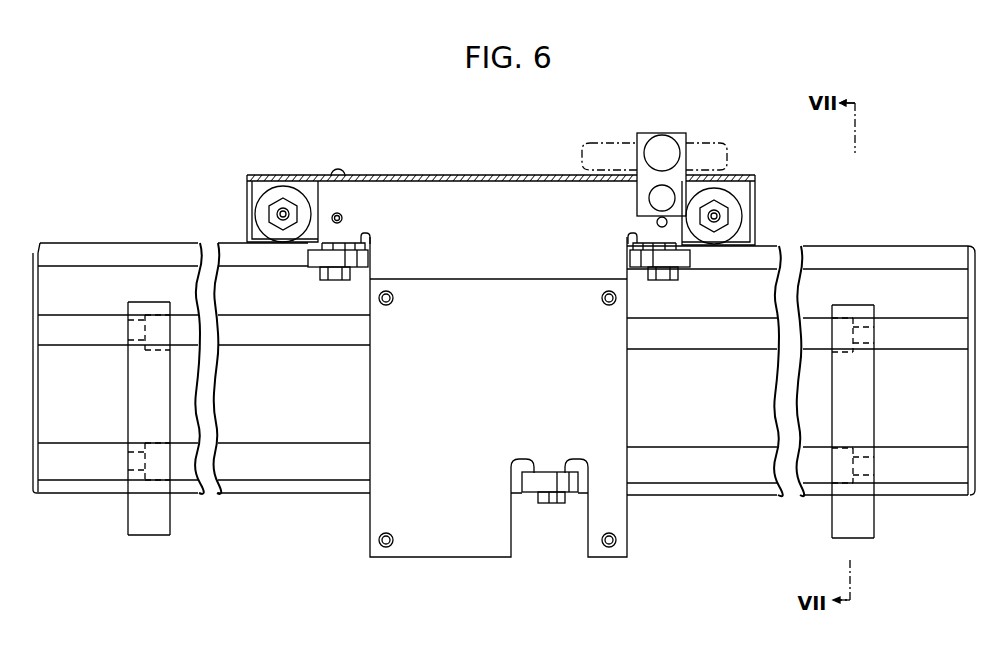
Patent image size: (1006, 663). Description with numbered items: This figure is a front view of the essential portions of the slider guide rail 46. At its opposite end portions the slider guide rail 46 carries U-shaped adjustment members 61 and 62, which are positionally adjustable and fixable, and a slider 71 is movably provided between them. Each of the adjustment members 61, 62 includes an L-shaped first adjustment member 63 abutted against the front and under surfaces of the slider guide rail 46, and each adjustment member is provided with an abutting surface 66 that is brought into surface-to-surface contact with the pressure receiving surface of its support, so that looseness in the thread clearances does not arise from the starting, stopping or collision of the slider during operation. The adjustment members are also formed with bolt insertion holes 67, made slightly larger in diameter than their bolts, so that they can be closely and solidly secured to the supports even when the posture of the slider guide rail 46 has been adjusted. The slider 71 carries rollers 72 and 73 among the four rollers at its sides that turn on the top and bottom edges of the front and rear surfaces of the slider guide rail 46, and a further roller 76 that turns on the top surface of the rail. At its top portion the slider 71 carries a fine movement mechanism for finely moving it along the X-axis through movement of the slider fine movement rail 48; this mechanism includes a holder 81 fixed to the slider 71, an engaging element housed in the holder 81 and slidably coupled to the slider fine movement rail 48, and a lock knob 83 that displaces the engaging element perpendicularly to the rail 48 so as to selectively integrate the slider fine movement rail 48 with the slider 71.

The slider guide rail 46 is at (903, 256).
The slider fine movement rail 48 is at (705, 143).
The adjustment member 61 is at (874, 522).
The adjustment member 62 is at (128, 512).
The first adjustment member 63 is at (170, 518).
The abutting surface 66 is at (128, 380).
The bolt insertion hole 67 is at (157, 352).
The slider 71 is at (462, 545).
The roller 72 is at (316, 258).
The roller 73 is at (543, 478).
The roller 76 is at (283, 205).
The holder 81 is at (645, 133).
The lock knob 83 is at (662, 152).